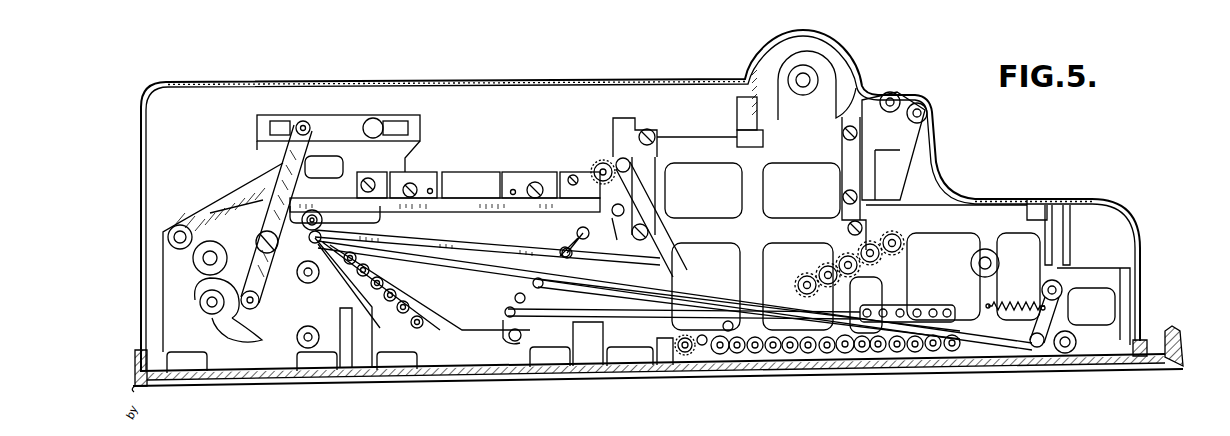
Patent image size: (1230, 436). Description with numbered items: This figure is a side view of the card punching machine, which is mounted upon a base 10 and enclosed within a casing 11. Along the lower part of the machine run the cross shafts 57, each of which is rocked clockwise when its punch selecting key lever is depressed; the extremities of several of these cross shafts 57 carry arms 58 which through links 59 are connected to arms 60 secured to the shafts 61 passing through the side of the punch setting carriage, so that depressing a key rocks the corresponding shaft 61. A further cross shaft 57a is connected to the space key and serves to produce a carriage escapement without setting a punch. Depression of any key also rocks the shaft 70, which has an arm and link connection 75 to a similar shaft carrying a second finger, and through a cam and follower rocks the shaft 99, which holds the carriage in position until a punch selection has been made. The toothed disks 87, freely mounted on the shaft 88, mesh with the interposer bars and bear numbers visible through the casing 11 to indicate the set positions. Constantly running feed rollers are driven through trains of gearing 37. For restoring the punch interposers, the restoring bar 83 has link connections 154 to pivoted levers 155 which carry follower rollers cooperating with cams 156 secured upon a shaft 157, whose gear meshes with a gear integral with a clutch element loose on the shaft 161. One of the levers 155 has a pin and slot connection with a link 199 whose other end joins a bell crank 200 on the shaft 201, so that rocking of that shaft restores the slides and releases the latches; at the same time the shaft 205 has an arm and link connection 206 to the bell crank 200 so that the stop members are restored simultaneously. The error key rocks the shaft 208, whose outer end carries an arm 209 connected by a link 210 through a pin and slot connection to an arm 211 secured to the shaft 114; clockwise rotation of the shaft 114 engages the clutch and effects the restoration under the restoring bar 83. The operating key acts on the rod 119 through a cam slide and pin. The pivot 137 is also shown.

The base 10 is at (1179, 336).
The casing 11 is at (640, 78).
The trains of gearing 37 is at (875, 266).
The cross shafts 57 is at (790, 354).
The cross shaft 57a is at (720, 354).
The arms 58 is at (845, 353).
The links 59 is at (640, 307).
The arms 60 is at (503, 311).
The shafts 61 is at (416, 318).
The shaft 70 is at (310, 212).
The arm and link connection 75 is at (492, 278).
The restoring bar 83 is at (392, 123).
The disks 87 is at (840, 66).
The shaft 88 is at (807, 77).
The shaft 99 is at (1065, 354).
The shaft 114 is at (310, 283).
The rod 119 is at (168, 238).
The pivot 137 is at (981, 270).
The link connections 154 is at (330, 114).
The pivoted levers 155 is at (283, 170).
The cams 156 is at (230, 341).
The shaft 157 is at (204, 304).
The shaft 161 is at (204, 259).
The link 199 is at (470, 207).
The bell crank 200 is at (598, 174).
The shaft 201 is at (604, 160).
The shaft 205 is at (684, 354).
The arm and link connection 206 is at (655, 232).
The shaft 208 is at (1058, 285).
The arm 209 is at (1052, 310).
The link 210 is at (425, 243).
The arm 211 is at (271, 256).